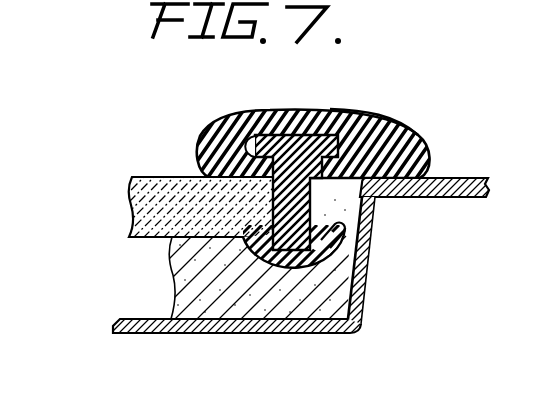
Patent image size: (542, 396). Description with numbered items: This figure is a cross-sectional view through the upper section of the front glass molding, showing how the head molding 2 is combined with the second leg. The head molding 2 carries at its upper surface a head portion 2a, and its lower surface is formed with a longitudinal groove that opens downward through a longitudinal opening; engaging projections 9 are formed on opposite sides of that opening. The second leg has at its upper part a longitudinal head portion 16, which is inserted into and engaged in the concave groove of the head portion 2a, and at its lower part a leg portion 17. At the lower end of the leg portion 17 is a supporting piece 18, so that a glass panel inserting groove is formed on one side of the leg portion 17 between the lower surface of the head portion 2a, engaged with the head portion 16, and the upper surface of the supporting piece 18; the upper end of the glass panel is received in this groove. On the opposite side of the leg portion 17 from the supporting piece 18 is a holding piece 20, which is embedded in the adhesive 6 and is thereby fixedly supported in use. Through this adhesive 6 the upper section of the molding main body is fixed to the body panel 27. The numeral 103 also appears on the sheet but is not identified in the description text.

The head molding 2 is at (409, 130).
The head portion 2a is at (366, 133).
The adhesive 6 is at (200, 290).
The engaging projections 9 is at (233, 155).
The head portion of the second leg 16 is at (268, 111).
The leg portion 17 is at (292, 257).
The supporting piece 18 is at (247, 270).
The holding piece 20 is at (357, 266).
The body panel 27 is at (467, 198).
The assembly 103 is at (482, 383).